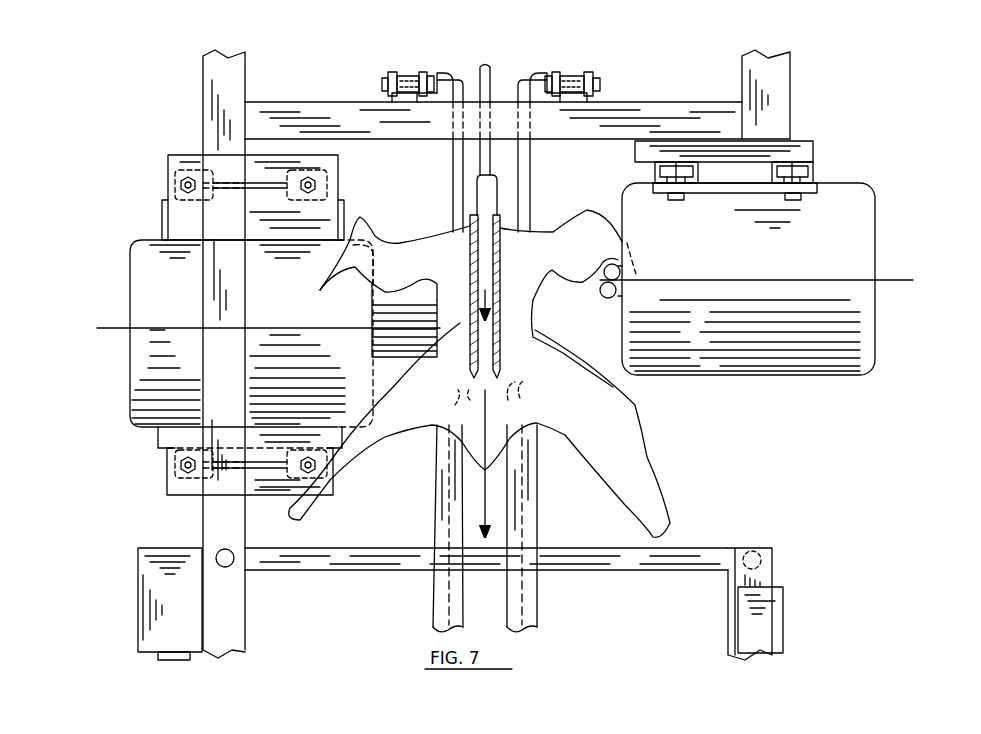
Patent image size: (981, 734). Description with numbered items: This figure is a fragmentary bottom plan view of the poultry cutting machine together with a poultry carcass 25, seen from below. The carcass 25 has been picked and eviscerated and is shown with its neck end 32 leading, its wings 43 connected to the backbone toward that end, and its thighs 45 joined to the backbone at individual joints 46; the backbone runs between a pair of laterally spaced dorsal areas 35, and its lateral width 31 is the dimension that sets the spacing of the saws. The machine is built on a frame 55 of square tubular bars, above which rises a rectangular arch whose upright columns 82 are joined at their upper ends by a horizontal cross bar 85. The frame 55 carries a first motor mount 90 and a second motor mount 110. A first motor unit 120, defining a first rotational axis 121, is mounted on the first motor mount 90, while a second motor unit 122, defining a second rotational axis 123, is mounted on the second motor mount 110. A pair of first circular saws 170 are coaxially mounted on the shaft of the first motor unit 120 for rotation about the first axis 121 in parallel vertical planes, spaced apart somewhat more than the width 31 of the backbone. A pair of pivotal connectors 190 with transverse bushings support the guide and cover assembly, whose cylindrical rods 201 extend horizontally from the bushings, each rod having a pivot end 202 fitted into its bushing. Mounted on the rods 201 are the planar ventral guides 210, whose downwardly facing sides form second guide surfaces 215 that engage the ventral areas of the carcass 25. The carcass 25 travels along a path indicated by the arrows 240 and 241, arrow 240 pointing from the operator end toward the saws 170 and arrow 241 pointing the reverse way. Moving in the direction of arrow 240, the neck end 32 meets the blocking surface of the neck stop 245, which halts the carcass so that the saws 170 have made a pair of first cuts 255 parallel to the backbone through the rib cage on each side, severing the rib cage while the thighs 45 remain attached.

The poultry carcass 25 is at (660, 443).
The backbone width 31 is at (497, 165).
The neck end 32 is at (470, 218).
The dorsal areas 35 is at (410, 298).
The wings 43 is at (390, 240).
The thighs 45 is at (363, 408).
The joints 46 is at (500, 398).
The frame 55 is at (806, 82).
The upright columns 82 is at (245, 560).
The cross bar 85 is at (680, 552).
The first motor mount 90 is at (838, 170).
The second motor mount 110 is at (150, 216).
The first motor unit 120 is at (882, 235).
The first rotational axis 121 is at (850, 282).
The second motor unit 122 is at (125, 298).
The second rotational axis 123 is at (165, 328).
The first circular saws 170 is at (520, 345).
The pivotal connectors 190 is at (405, 72).
The cylindrical rods 201 is at (455, 165).
The pivot end 202 is at (495, 80).
The ventral guides 210 is at (433, 600).
The second guide surfaces 215 is at (505, 615).
The direction arrow 240 is at (480, 487).
The reverse direction arrow 241 is at (480, 390).
The neck stop 245 is at (487, 62).
The first cuts 255 is at (500, 220).